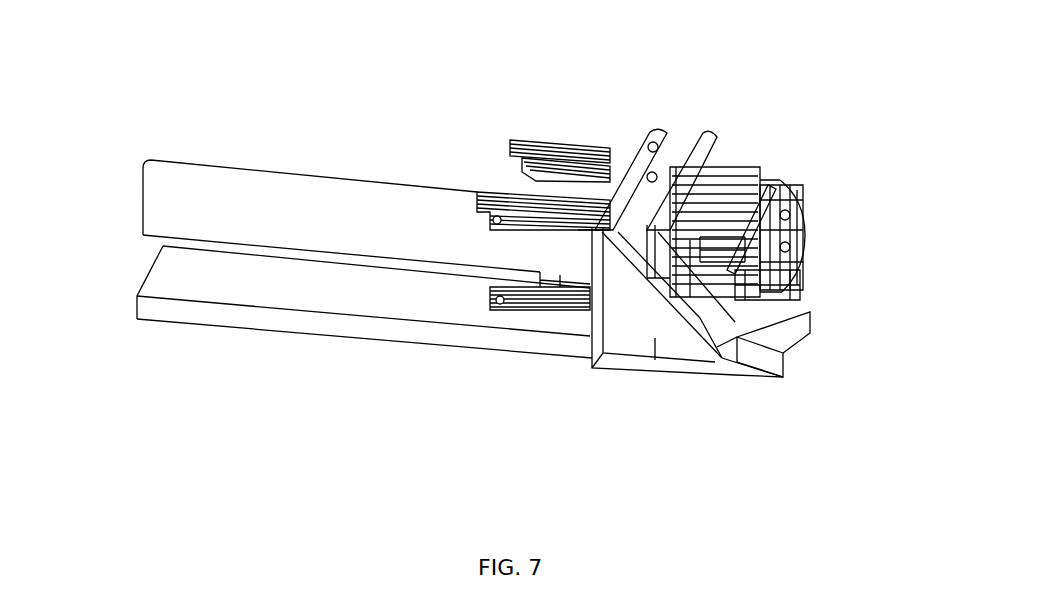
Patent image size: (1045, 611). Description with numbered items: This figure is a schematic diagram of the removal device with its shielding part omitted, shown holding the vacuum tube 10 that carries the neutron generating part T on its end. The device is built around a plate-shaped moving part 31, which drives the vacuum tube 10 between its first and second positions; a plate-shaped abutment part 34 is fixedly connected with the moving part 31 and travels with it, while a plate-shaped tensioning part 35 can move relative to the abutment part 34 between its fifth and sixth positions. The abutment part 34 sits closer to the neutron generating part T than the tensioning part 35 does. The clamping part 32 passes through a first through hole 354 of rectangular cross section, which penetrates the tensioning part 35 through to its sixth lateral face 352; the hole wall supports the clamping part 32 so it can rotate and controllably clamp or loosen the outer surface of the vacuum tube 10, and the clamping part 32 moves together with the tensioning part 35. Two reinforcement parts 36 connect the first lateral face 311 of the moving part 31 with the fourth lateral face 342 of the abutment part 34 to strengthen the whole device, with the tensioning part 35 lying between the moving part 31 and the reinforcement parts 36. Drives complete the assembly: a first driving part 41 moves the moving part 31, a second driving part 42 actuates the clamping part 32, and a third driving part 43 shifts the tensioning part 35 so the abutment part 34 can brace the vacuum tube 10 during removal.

The vacuum tube 10 is at (335, 207).
The neutron generating part T is at (141, 203).
The moving part 31 is at (717, 362).
The first lateral face 311 is at (712, 368).
The clamping part 32 is at (797, 212).
The abutment part 34 is at (627, 143).
The fourth lateral face 342 is at (675, 142).
The tensioning part 35 is at (706, 143).
The sixth lateral face 352 is at (703, 168).
The first through hole 354 is at (705, 176).
The reinforcement part 36 is at (655, 337).
The first driving part 41 is at (790, 367).
The second driving part 42 is at (783, 288).
The third driving part 43 is at (737, 350).